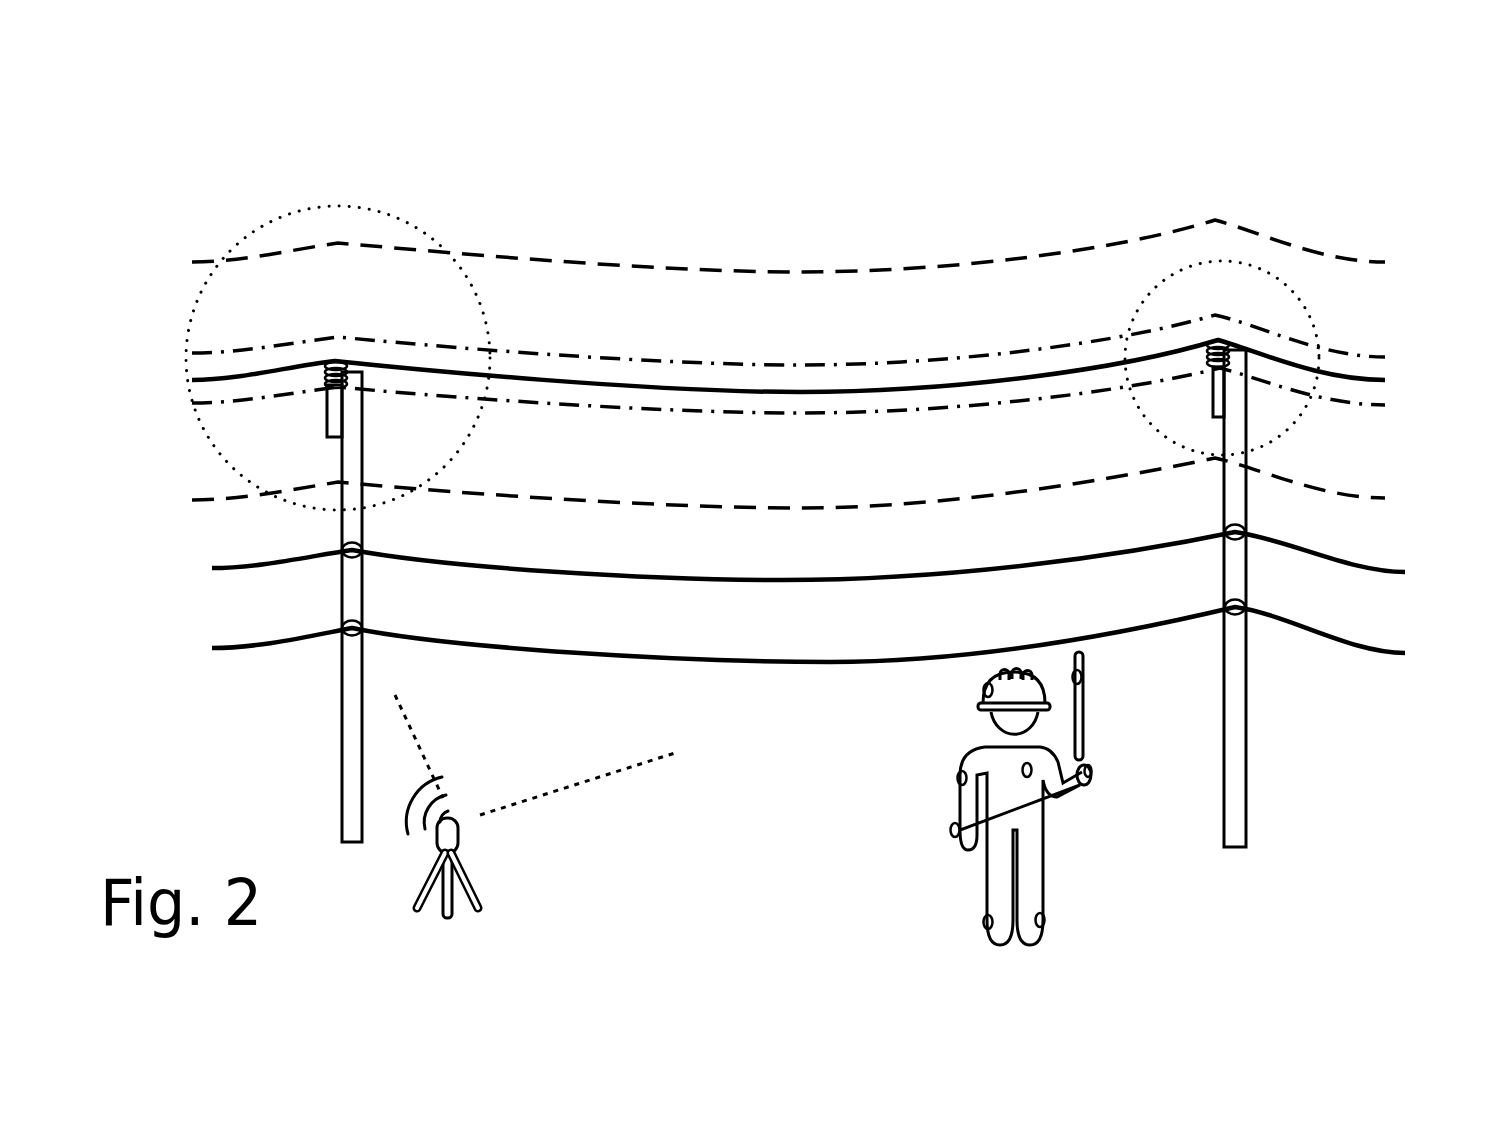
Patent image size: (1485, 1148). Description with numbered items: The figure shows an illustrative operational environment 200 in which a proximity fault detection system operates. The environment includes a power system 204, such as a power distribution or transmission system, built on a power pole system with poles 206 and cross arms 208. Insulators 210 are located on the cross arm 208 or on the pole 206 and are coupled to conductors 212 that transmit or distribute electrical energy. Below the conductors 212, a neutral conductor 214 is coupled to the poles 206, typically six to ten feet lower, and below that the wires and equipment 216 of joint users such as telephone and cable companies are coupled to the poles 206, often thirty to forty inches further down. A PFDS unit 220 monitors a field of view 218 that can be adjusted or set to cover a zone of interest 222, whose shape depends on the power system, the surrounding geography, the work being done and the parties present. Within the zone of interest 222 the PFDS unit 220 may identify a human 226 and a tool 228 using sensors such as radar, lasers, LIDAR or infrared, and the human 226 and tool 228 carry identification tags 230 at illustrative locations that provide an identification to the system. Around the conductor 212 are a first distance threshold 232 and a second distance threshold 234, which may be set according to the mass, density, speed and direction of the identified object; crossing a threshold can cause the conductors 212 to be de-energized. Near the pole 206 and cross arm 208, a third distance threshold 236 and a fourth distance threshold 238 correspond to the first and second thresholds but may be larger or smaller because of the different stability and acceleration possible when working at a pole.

The operational environment 200 is at (190, 101).
The power system 204 is at (863, 170).
The pole 206 is at (340, 670).
The cross arm 208 is at (330, 437).
The insulator 210 is at (327, 388).
The conductor 212 is at (1303, 363).
The neutral conductor 214 is at (1370, 573).
The wires and equipment of joint users 216 is at (1363, 650).
The field of view 218 is at (608, 797).
The PFDS unit 220 is at (458, 835).
The zone of interest 222 is at (522, 85).
The human 226 is at (1043, 840).
The tool 228 is at (1085, 722).
The identification tag 230 is at (985, 692).
The first distance threshold 232 is at (808, 268).
The second distance threshold 234 is at (765, 362).
The third distance threshold 236 is at (397, 215).
The fourth distance threshold 238 is at (1257, 272).